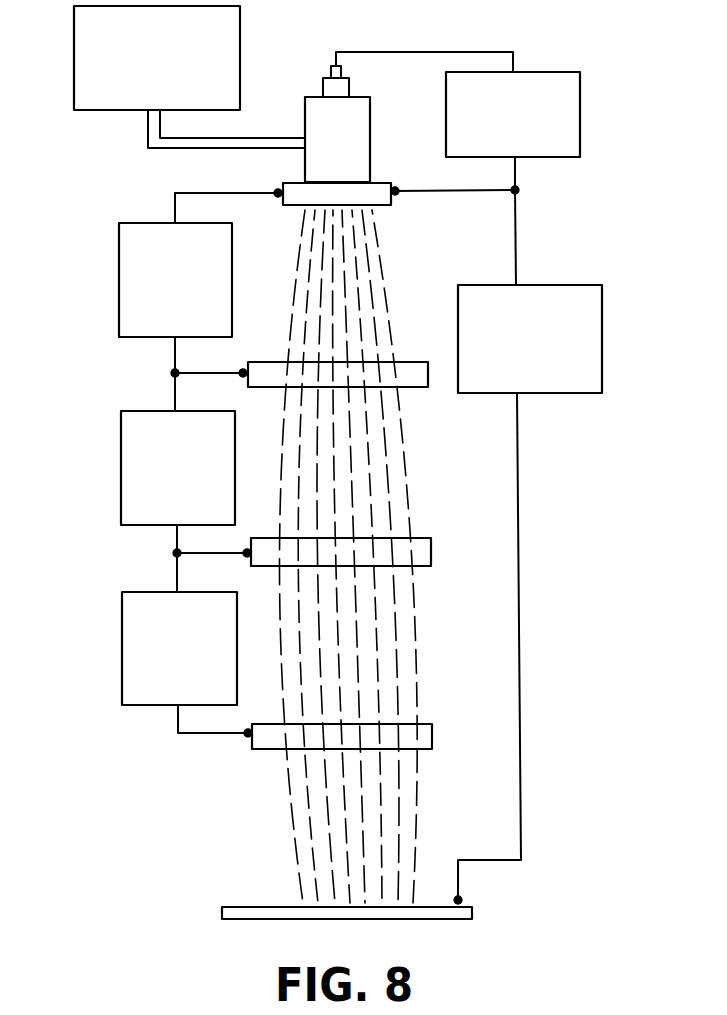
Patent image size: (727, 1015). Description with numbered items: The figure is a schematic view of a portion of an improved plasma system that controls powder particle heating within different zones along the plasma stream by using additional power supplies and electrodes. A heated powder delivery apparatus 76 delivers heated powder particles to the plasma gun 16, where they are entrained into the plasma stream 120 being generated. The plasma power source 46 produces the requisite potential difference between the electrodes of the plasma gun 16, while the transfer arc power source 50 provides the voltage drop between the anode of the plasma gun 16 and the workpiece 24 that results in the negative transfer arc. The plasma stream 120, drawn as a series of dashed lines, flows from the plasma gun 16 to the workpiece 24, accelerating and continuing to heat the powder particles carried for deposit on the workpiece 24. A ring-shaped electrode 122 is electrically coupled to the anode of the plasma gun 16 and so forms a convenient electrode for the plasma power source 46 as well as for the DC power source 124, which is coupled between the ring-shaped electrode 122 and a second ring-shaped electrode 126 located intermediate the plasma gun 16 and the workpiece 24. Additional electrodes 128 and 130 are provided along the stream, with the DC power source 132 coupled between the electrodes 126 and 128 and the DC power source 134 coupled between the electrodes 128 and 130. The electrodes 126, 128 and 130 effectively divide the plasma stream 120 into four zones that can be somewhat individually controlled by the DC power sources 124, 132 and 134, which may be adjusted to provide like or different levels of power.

The heated powder delivery apparatus 76 is at (83, 111).
The plasma gun 16 is at (370, 158).
The plasma power source 46 is at (580, 132).
The ring-shaped electrode 122 is at (385, 205).
The DC power source 124 is at (119, 309).
The DC power source 132 is at (121, 468).
The DC power source 134 is at (122, 641).
The second ring-shaped electrode 126 is at (420, 388).
The electrode 128 is at (431, 562).
The electrode 130 is at (432, 741).
The transfer arc power source 50 is at (602, 375).
The plasma stream 120 is at (296, 815).
The workpiece 24 is at (222, 913).